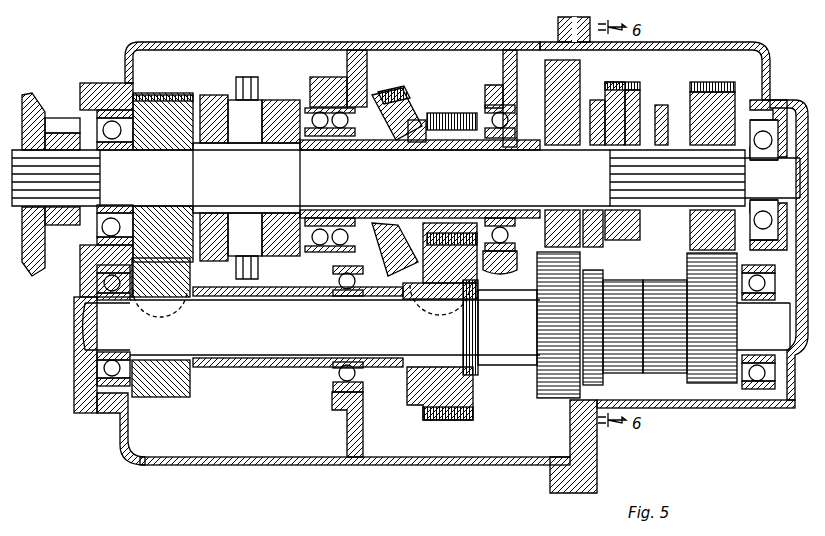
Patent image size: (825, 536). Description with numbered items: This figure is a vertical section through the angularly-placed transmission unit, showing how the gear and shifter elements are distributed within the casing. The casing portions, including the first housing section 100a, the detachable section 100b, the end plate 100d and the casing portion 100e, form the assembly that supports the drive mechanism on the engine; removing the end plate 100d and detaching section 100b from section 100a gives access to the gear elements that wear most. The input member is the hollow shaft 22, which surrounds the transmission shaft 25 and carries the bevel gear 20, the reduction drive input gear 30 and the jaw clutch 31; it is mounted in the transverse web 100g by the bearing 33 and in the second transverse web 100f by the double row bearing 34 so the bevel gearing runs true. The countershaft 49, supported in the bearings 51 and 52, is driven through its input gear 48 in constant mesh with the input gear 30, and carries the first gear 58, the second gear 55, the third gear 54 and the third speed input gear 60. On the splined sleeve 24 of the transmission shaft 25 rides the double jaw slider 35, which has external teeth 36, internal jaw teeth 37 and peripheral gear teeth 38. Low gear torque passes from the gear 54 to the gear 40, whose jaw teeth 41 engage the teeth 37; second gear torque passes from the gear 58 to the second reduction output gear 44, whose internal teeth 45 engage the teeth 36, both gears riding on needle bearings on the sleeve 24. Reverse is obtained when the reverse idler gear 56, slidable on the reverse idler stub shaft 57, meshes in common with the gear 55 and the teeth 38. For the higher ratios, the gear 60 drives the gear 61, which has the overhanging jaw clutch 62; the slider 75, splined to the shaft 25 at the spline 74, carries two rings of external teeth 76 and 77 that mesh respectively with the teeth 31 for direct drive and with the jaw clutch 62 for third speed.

The casing section 100a is at (505, 50).
The casing section 100b is at (682, 48).
The end plate 100d is at (792, 105).
The casing portion 100e is at (90, 415).
The transverse web 100f is at (335, 77).
The transverse web 100g is at (508, 84).
The bevel gear 20 is at (387, 95).
The hollow shaft 22 is at (414, 140).
The splined sleeve 24 is at (625, 153).
The transmission shaft 25 is at (290, 181).
The input gear 30 is at (442, 112).
The jaw clutch 31 is at (288, 112).
The bearing 33 is at (490, 130).
The double row bearing 34 is at (343, 148).
The double jaw slider 35 is at (618, 83).
The external teeth 36 is at (668, 118).
The internal jaw teeth 37 is at (604, 118).
The gear teeth 38 is at (632, 90).
The gear 40 is at (540, 60).
The jaw teeth 41 is at (600, 240).
The 2nd reduction output gear 44 is at (722, 85).
The internal teeth 45 is at (686, 98).
The input gear 48 is at (462, 418).
The countershaft 49 is at (262, 358).
The bearing 51 is at (98, 372).
The bearing 52 is at (760, 388).
The gear 54 is at (552, 380).
The gear 55 is at (640, 367).
The reverse idler gear 56 is at (660, 295).
The reverse idler stub shaft 57 is at (598, 295).
The gear 58 is at (718, 388).
The 3rd speed input gear 60 is at (181, 397).
The gear 61 is at (157, 95).
The jaw clutch 62 is at (198, 138).
The spline 74 is at (240, 138).
The slider 75 is at (246, 77).
The external teeth 76 is at (266, 130).
The external teeth 77 is at (218, 98).